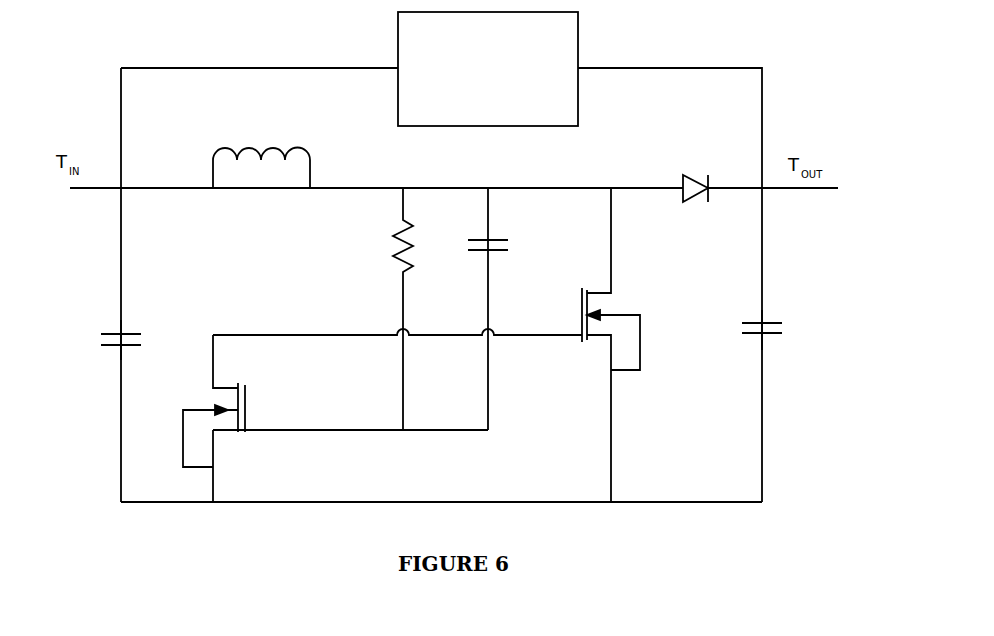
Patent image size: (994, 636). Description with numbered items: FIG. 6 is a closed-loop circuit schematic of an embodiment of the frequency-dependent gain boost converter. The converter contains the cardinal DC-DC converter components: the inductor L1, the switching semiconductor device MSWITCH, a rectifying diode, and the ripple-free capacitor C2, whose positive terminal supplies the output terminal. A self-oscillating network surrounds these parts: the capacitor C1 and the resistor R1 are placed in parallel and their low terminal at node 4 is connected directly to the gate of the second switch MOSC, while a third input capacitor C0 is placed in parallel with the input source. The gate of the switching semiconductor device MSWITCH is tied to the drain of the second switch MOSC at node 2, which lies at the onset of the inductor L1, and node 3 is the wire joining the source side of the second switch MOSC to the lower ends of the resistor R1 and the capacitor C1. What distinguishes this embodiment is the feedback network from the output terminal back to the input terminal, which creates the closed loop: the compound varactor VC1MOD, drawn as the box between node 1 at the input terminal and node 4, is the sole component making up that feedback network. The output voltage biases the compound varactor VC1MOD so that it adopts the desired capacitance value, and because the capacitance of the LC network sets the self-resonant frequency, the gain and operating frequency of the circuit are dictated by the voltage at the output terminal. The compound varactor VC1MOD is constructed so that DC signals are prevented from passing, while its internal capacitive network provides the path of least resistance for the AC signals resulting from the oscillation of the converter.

The node 1 is at (141, 178).
The node 2 is at (397, 326).
The feedback node 3 is at (350, 421).
The node 4 is at (773, 178).
The inductor L1 is at (261, 158).
The resistor R1 is at (390, 309).
The capacitor C1 is at (498, 309).
The third input capacitor C0 is at (131, 340).
The ripple-free capacitor C2 is at (772, 330).
The second switch MOSC is at (221, 418).
The switching semiconductor device MSWITCH is at (595, 345).
The compound varactor VC1MOD is at (488, 69).